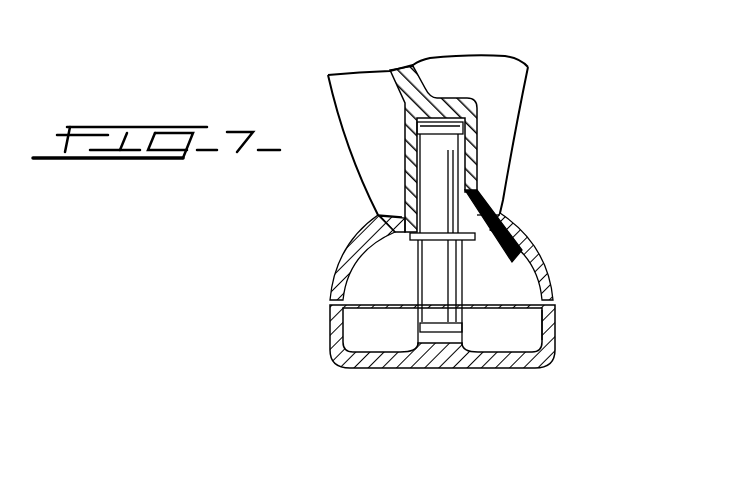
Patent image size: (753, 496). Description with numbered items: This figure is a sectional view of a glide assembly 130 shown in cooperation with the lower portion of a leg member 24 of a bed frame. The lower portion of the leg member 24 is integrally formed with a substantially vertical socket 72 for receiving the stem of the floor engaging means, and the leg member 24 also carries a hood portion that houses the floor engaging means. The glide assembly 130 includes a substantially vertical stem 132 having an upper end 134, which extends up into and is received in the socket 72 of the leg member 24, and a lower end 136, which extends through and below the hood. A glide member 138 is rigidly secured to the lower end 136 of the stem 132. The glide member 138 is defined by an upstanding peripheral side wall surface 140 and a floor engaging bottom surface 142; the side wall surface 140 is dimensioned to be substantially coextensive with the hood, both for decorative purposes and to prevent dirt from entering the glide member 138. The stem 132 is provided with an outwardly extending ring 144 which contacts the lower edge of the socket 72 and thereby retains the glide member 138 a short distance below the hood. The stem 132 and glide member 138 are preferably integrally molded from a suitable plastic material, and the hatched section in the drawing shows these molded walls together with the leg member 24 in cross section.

The leg member 24 is at (530, 67).
The socket 72 is at (416, 158).
The upper end 134 is at (452, 152).
The stem 132 is at (450, 217).
The ring 144 is at (466, 238).
The lower end 136 is at (447, 315).
The glide assembly 130 is at (334, 321).
The peripheral side wall surface 140 is at (553, 338).
The glide member 138 is at (548, 368).
The floor engaging bottom surface 142 is at (432, 370).